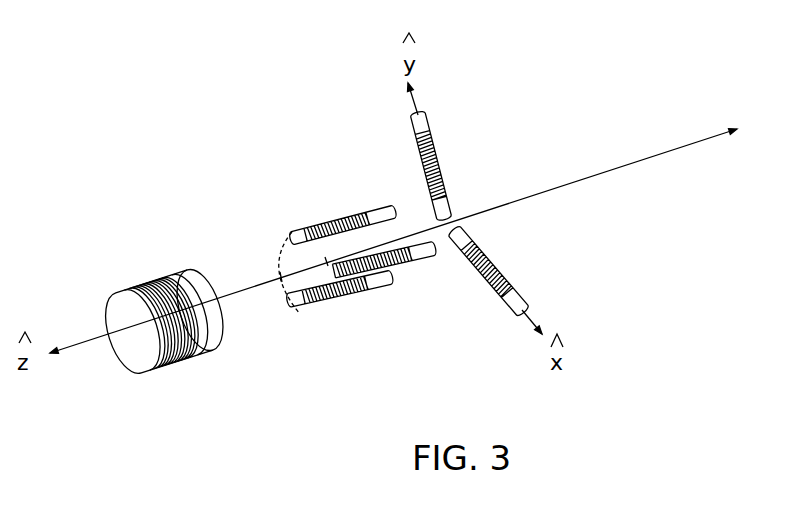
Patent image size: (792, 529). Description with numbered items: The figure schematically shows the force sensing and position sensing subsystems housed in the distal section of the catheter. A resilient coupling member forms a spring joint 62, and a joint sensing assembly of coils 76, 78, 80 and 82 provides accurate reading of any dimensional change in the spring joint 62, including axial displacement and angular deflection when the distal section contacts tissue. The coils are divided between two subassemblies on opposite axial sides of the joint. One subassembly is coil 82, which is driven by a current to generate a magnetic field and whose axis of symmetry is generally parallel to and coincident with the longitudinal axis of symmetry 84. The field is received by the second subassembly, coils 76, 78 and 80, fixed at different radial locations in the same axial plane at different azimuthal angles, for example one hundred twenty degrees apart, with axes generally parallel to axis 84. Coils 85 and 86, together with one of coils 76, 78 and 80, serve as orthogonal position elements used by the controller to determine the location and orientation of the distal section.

The spring joint 62 is at (250, 332).
The coil 76 is at (297, 236).
The coil 78 is at (302, 314).
The coil 80 is at (428, 262).
The coil 82 is at (167, 367).
The longitudinal axis of symmetry 84 is at (623, 166).
The coil 85 is at (441, 149).
The coil 86 is at (500, 262).